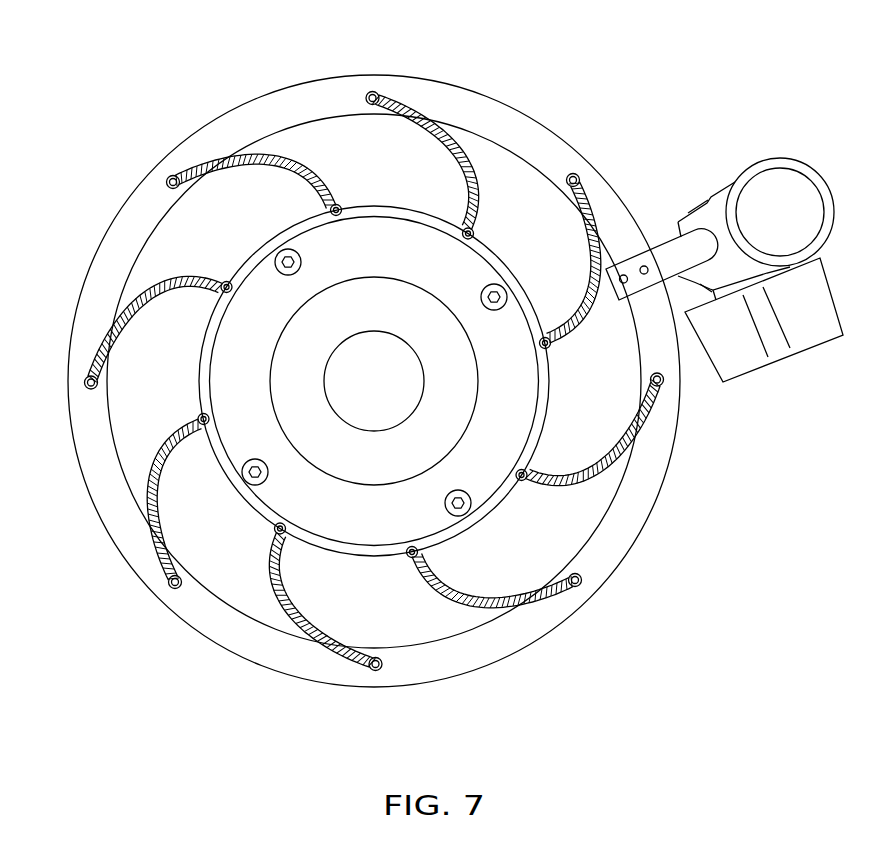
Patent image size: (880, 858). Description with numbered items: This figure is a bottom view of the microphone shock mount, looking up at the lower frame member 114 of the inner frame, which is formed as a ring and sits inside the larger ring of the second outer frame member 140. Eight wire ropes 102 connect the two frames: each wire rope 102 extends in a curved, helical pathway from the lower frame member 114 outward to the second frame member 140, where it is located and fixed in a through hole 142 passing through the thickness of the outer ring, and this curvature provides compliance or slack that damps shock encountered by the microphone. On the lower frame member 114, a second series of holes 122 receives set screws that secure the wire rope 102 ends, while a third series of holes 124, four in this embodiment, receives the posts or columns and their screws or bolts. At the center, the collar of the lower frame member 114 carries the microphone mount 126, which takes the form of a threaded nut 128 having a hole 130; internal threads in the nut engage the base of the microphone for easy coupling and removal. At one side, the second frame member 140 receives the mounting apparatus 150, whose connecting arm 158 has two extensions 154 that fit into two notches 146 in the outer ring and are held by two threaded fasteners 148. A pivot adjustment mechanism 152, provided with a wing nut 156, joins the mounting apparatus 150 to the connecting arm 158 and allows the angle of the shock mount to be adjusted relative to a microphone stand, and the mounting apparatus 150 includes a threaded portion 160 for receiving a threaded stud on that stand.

The wire rope 102 is at (436, 110).
The lower frame member 114 is at (215, 389).
The second series of holes 122 is at (341, 205).
The third series of holes 124 is at (283, 255).
The microphone mount 126 is at (378, 298).
The threaded nut 128 is at (357, 474).
The hole 130 is at (332, 407).
The second outer frame member 140 is at (638, 518).
The through holes 142 is at (369, 92).
The notches 146 is at (640, 255).
The threaded fasteners 148 is at (622, 284).
The mounting apparatus 150 is at (728, 184).
The pivot adjustment mechanism 152 is at (706, 200).
The extensions 154 is at (704, 298).
The wing nut 156 is at (812, 330).
The connecting arm 158 is at (660, 250).
The threaded portion 160 is at (788, 190).